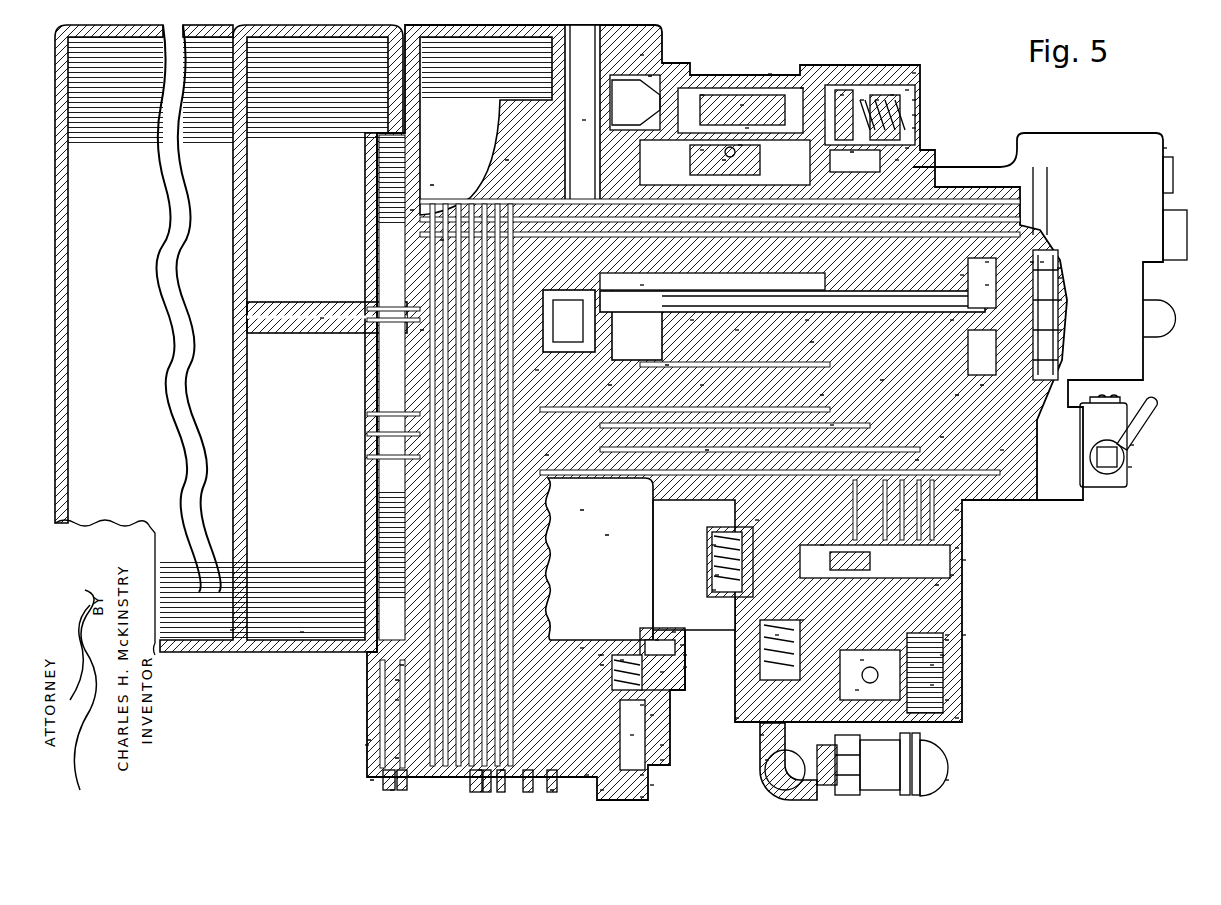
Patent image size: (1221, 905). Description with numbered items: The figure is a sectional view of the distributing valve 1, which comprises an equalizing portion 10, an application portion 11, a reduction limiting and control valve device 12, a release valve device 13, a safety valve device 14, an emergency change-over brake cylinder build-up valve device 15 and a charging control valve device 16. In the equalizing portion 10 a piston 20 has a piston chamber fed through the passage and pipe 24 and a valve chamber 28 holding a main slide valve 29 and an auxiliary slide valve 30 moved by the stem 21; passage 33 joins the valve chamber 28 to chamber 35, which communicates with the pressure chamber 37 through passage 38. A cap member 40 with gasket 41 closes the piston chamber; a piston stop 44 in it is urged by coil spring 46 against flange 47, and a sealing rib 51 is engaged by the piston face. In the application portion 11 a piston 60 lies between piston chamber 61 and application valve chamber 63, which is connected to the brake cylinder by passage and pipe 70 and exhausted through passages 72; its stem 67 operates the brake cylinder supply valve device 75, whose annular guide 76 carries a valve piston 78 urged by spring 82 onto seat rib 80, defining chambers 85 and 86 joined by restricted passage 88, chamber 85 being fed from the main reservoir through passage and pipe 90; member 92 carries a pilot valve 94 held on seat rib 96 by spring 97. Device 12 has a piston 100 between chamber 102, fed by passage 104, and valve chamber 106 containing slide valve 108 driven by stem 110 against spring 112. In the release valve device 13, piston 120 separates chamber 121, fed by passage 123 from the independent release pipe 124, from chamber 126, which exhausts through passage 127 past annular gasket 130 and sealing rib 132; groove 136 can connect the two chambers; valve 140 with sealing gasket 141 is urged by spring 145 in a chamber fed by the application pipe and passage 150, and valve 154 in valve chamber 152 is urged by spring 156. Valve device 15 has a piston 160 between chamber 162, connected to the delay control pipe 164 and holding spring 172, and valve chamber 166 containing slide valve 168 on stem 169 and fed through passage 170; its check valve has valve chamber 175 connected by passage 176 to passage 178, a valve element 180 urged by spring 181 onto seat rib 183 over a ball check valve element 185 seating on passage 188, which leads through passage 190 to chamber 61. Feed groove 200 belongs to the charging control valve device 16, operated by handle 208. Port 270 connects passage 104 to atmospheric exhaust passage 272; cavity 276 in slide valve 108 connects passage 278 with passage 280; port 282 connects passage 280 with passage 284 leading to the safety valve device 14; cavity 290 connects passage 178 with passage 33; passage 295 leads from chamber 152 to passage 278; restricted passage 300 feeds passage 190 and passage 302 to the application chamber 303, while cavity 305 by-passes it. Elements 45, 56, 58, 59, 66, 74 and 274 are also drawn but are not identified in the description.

The distributing valve device 1 is at (365, 745).
The equalizing portion 10 is at (1174, 147).
The application portion 11 is at (772, 66).
The reduction limiting and control valve device 12 is at (975, 564).
The release valve device 13 is at (975, 640).
The safety valve device 14 is at (956, 788).
The emergency change-over brake cylinder build-up valve device 15 is at (662, 789).
The charging control valve device 16 is at (1140, 472).
The piston 20 is at (1059, 268).
The stem 21 is at (987, 285).
The passage and pipe 24 is at (400, 667).
The valve chamber 28 is at (642, 285).
The main slide valve 29 is at (692, 320).
The auxiliary slide valve 30 is at (807, 320).
The passage 33 is at (957, 396).
The chamber 35 is at (537, 372).
The pressure chamber 37 is at (232, 632).
The passage 38 is at (322, 320).
The cap member 40 is at (1122, 135).
The gasket 41 is at (1042, 262).
The piston stop 44 is at (1060, 300).
The ball 45 is at (857, 690).
The coil spring 46 is at (1060, 278).
The flange 47 is at (1060, 330).
The sealing rib 51 is at (987, 262).
The valve seat 56 is at (868, 653).
The valve 58 is at (802, 620).
The seal 59 is at (962, 275).
The piston 60 is at (642, 56).
The piston chamber 61 is at (584, 122).
The application valve chamber 63 is at (742, 105).
The ball 66 is at (740, 146).
The stem 67 is at (702, 95).
The passage and pipe 70 is at (500, 780).
The passages 72 is at (747, 130).
The port 74 is at (702, 152).
The brake cylinder supply valve device 75 is at (907, 90).
The annular guide 76 is at (914, 73).
The valve piston 78 is at (877, 100).
The annular seat rib 80 is at (802, 88).
The spring 82 is at (914, 100).
The chamber 85 is at (842, 95).
The chamber 86 is at (907, 148).
The restricted passage 88 is at (897, 160).
The passage and pipe 90 is at (478, 778).
The member 92 is at (862, 100).
The pilot valve 94 is at (914, 115).
The seat rib 96 is at (892, 95).
The spring 97 is at (914, 128).
The piston 100 is at (714, 590).
The chamber 102 is at (715, 575).
The passage 104 is at (755, 520).
The valve chamber 106 is at (952, 575).
The slide valve 108 is at (957, 512).
The stem 110 is at (957, 548).
The spring 112 is at (712, 545).
The piston 120 is at (932, 685).
The chamber 121 is at (947, 635).
The passage 123 is at (947, 640).
The independent release pipe 124 is at (392, 790).
The chamber 126 is at (947, 700).
The passage 127 is at (922, 722).
The annular gasket 130 is at (932, 665).
The sealing rib 132 is at (957, 718).
The groove 136 is at (942, 655).
The valve 140 is at (753, 725).
The sealing gasket 141 is at (765, 760).
The spring 145 is at (760, 737).
The application pipe and passage 150 is at (375, 790).
The valve chamber 152 is at (632, 735).
The valve 154 is at (652, 715).
The spring 156 is at (642, 705).
The piston 160 is at (600, 655).
The chamber 162 is at (657, 640).
The delay control pipe 164 is at (600, 667).
The valve chamber 166 is at (642, 775).
The slide valve 168 is at (662, 745).
The stem 169 is at (642, 797).
The passage 170 is at (600, 657).
The spring 172 is at (622, 660).
The valve chamber 175 is at (674, 632).
The passage 176 is at (582, 648).
The passage 178 is at (360, 744).
The valve element 180 is at (685, 655).
The spring 181 is at (682, 645).
The seat rib 183 is at (685, 667).
The ball check valve element 185 is at (662, 672).
The passage 188 is at (662, 760).
The passage 190 is at (585, 530).
The feed groove 200 is at (1002, 450).
The handle 208 is at (1132, 445).
The port 270 is at (737, 330).
The atmospheric exhaust passage 272 is at (702, 385).
The passage 274 is at (1022, 502).
The cavity 276 is at (822, 545).
The passage 278 is at (832, 426).
The passage 280 is at (935, 585).
The port 282 is at (982, 383).
The passage 284 is at (917, 460).
The cavity 290 is at (965, 312).
The passage 295 is at (777, 635).
The restricted passage 300 is at (602, 792).
The passage 302 is at (395, 700).
The application chamber 303 is at (302, 634).
The cavity 305 is at (587, 777).